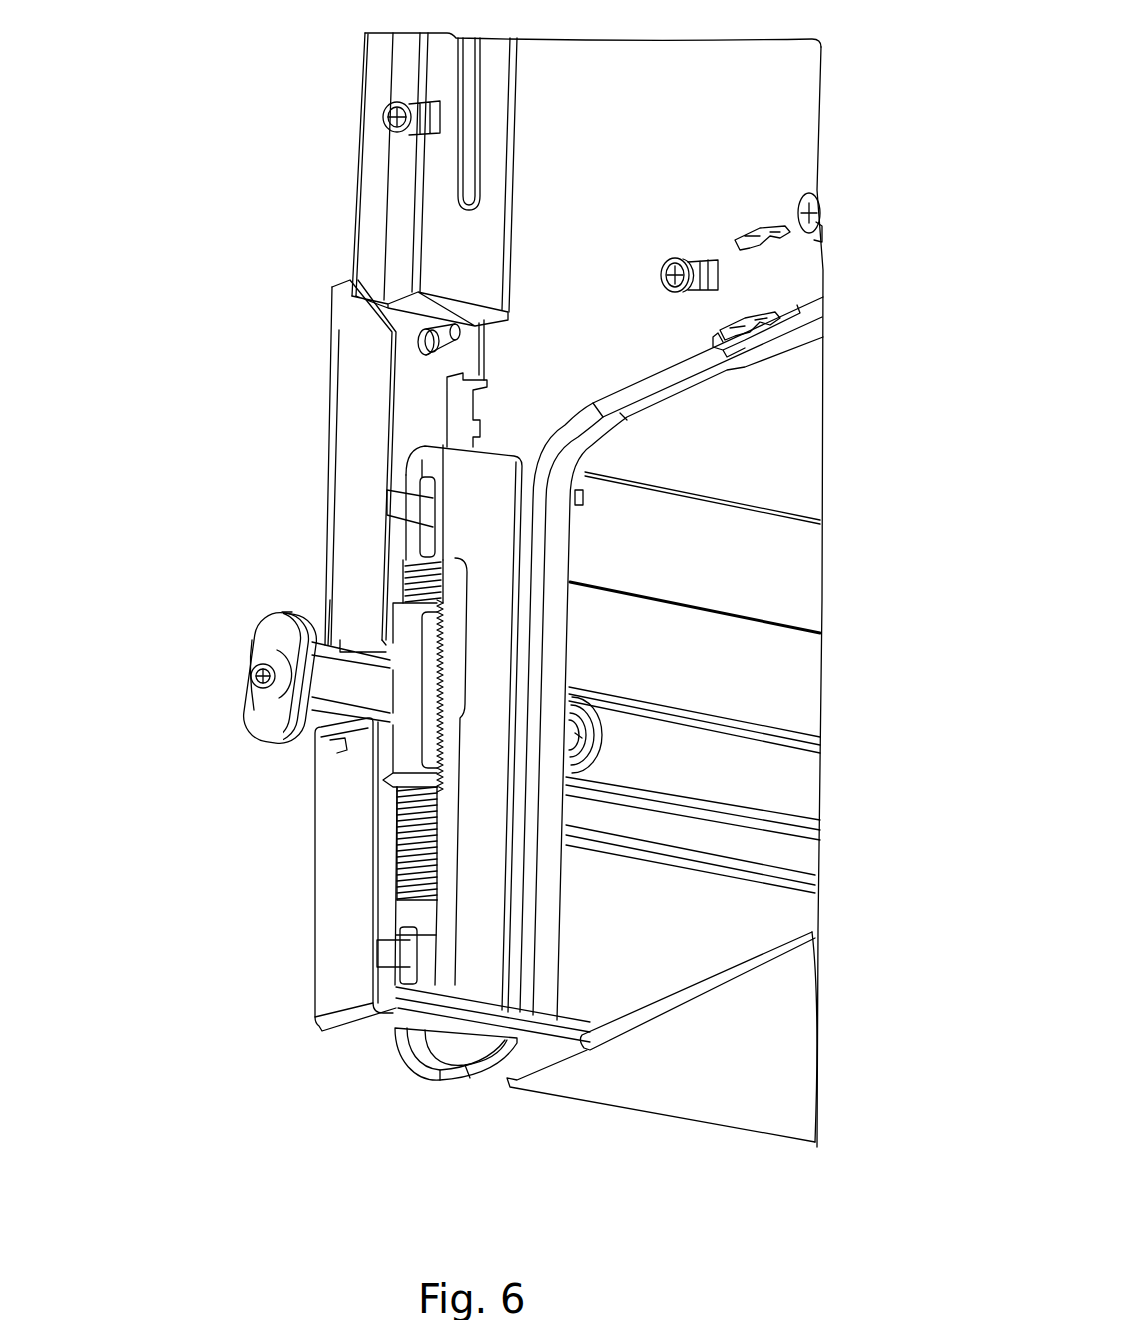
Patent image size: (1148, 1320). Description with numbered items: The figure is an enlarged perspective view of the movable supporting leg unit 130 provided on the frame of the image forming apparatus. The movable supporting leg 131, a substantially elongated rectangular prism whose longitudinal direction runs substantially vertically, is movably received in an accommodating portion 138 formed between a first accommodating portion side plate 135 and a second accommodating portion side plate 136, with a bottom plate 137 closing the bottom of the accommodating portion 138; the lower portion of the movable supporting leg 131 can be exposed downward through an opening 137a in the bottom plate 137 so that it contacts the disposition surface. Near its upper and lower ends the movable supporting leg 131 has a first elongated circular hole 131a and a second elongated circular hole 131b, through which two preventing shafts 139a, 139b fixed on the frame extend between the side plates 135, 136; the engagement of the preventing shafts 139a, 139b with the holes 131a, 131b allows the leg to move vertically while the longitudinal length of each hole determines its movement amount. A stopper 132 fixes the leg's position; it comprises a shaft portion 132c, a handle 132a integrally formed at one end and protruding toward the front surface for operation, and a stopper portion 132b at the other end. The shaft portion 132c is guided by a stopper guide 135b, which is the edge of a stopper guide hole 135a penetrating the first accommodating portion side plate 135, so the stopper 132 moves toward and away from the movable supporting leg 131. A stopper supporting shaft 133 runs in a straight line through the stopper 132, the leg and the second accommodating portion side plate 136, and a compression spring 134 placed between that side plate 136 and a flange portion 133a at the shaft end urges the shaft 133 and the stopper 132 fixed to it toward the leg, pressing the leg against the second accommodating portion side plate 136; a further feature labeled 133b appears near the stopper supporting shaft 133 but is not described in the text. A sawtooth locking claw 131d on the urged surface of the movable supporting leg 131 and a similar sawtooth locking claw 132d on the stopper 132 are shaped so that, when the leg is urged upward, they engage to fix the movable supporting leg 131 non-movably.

The movable supporting leg unit 130 is at (262, 492).
The movable supporting leg 131 is at (410, 1064).
The first elongated circular hole 131a is at (413, 467).
The second elongated circular hole 131b is at (413, 918).
The sawtooth locking claw 131d is at (460, 717).
The stopper 132 is at (308, 730).
The handle 132a is at (282, 612).
The stopper portion 132b is at (390, 750).
The shaft portion 132c is at (343, 650).
The sawtooth locking claw 132d is at (400, 682).
The stopper supporting shaft 133 is at (246, 670).
The flange portion 133a is at (592, 727).
The knob rim 133b is at (258, 627).
The compression spring 134 is at (575, 735).
The first accommodating portion side plate 135 is at (345, 335).
The stopper guide hole 135a is at (375, 643).
The stopper guide 135b is at (343, 640).
The second accommodating portion side plate 136 is at (527, 572).
The bottom plate 137 is at (360, 1033).
The opening 137a is at (370, 1035).
The accommodating portion 138 is at (390, 863).
The preventing shaft 139a is at (405, 508).
The preventing shaft 139b is at (388, 957).